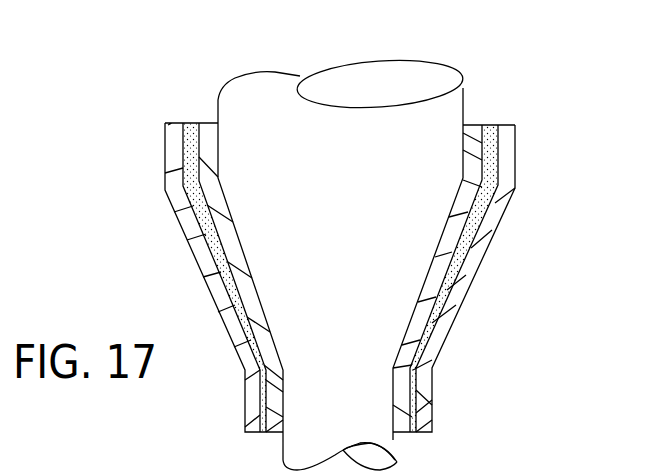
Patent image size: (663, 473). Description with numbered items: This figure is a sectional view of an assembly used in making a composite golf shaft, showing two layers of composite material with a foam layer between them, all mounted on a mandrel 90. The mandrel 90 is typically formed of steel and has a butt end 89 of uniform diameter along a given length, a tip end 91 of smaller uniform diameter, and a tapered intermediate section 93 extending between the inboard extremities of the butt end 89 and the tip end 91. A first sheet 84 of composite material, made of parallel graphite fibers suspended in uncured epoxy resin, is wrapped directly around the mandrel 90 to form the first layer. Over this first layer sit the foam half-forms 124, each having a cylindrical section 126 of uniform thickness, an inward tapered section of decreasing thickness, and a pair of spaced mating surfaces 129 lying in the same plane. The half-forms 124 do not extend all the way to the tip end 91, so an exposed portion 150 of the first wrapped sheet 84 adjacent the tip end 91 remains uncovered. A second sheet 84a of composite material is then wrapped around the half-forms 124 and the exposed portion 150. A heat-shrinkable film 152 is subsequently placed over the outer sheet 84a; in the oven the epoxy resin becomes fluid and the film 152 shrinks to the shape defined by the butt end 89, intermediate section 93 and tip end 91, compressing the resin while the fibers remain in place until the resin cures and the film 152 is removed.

The sheet of composite material 84 is at (473, 116).
The second sheet of composite material 84a is at (508, 116).
The butt end 89 is at (225, 117).
The mandrel 90 is at (392, 55).
The tip end 91 is at (378, 421).
The tapered intermediate section 93 is at (270, 245).
The foam half-form 124 is at (492, 116).
The cylindrical section 126 is at (495, 160).
The mating surfaces 129 is at (472, 223).
The exposed portion 150 is at (418, 391).
The heat-shrinkable film 152 is at (48, 465).